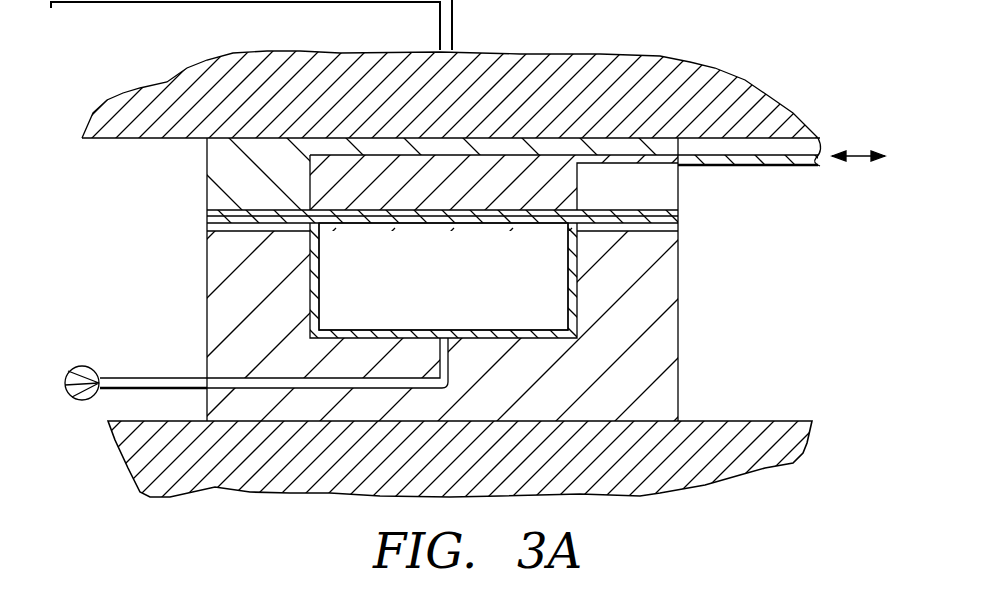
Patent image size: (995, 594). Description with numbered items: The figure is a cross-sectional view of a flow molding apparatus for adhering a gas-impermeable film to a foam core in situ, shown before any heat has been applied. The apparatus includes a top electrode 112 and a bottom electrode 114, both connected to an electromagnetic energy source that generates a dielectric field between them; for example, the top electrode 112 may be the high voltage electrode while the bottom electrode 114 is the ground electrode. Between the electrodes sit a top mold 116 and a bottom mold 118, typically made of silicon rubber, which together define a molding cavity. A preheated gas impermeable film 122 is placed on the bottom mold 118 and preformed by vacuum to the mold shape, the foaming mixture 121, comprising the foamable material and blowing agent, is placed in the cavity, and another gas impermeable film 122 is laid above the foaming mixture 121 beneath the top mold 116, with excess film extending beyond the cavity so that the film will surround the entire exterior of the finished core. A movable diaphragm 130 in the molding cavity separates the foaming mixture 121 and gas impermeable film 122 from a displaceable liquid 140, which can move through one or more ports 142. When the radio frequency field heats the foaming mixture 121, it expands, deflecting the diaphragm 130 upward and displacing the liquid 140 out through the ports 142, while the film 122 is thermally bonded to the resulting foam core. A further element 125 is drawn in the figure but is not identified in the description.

The upper housing member 112 is at (757, 90).
The lower housing member 114 is at (707, 460).
The support block 116 is at (230, 178).
The base block 118 is at (228, 300).
The cavity 121 is at (463, 283).
The liner layer 122 is at (680, 216).
The fluid conduit 125 is at (82, 373).
The insert 130 is at (613, 210).
The intermediate layer 140 is at (463, 194).
The sliding strip 142 is at (685, 160).